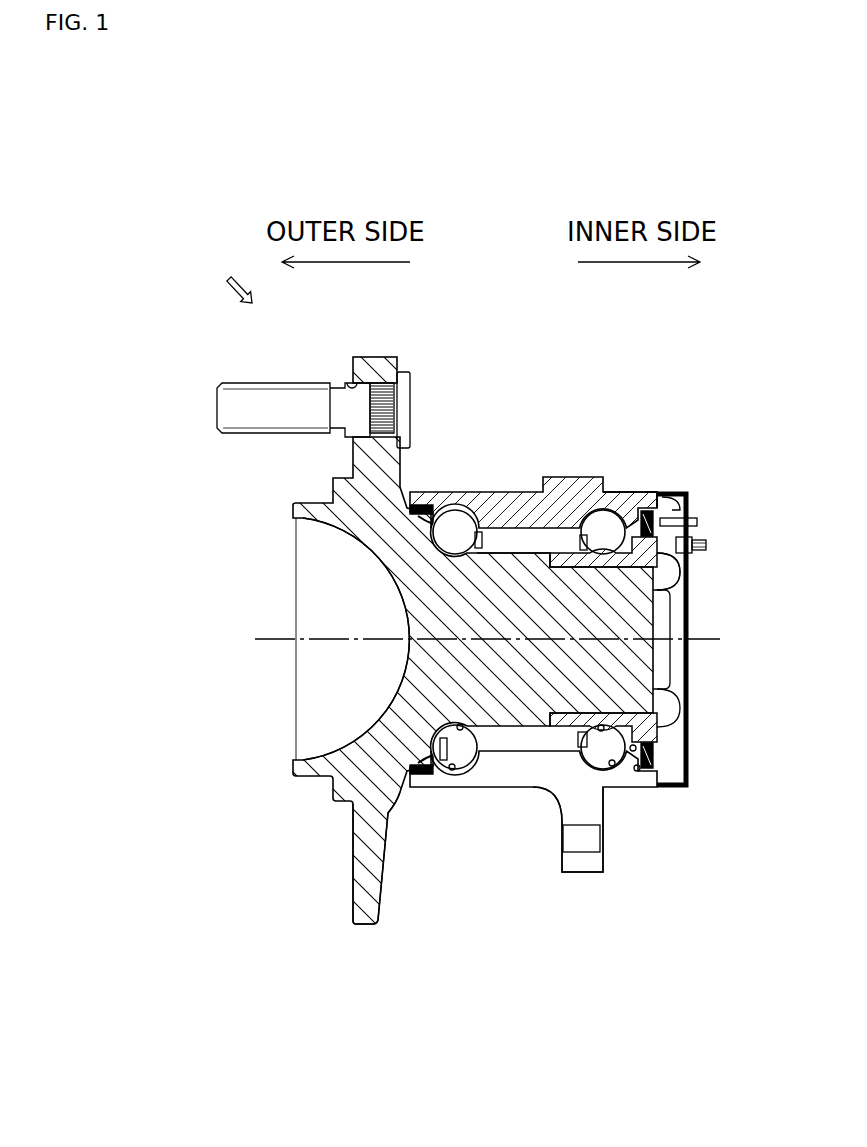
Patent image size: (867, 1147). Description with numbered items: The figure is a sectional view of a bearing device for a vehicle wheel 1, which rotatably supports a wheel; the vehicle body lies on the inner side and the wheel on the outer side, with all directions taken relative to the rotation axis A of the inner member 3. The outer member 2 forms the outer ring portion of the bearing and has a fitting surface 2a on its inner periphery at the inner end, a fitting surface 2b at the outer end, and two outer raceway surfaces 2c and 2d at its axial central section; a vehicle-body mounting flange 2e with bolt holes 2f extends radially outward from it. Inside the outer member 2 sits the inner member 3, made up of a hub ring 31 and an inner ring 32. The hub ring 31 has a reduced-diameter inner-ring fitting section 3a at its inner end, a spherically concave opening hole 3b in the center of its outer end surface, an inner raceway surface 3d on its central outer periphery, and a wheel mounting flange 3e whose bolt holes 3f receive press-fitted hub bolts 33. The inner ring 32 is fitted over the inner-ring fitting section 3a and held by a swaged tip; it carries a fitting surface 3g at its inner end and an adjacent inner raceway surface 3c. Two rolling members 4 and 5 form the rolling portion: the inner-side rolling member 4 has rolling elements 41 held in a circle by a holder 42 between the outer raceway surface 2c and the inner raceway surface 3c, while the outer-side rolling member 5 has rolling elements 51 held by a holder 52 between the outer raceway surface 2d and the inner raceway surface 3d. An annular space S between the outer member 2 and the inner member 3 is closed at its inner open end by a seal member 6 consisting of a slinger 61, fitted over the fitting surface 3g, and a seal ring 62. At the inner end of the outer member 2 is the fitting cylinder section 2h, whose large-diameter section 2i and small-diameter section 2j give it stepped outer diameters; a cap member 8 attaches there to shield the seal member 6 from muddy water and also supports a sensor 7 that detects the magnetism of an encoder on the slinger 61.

The bearing device for a vehicle wheel 1 is at (232, 279).
The outer member 2 is at (564, 472).
The fitting surface 2a is at (642, 773).
The fitting surface 2b is at (427, 772).
The outer raceway surface 2c is at (614, 768).
The outer raceway surface 2d is at (452, 770).
The vehicle-body mounting flange 2e is at (572, 873).
The bolt holes 2f is at (605, 849).
The fitting cylinder section 2h is at (683, 442).
The large-diameter section 2i is at (623, 491).
The small-diameter section 2j is at (666, 498).
The inner member 3 is at (763, 735).
The hub ring 31 is at (678, 706).
The inner ring 32 is at (658, 740).
The inner-ring fitting section 3a is at (672, 573).
The opening hole 3b is at (377, 723).
The inner raceway surface 3c is at (601, 726).
The inner raceway surface 3d is at (461, 724).
The wheel mounting flange 3e is at (360, 924).
The bolt holes 3f is at (345, 384).
The fitting surface 3g is at (633, 745).
The rolling member 4 is at (598, 639).
The rolling elements 41 is at (612, 551).
The holder 42 is at (577, 571).
The rolling member 5 is at (464, 639).
The rolling elements 51 is at (450, 548).
The holder 52 is at (483, 570).
The seal member 6 is at (716, 493).
The slinger 61 is at (657, 526).
The seal ring 62 is at (671, 493).
The sensor 7 is at (700, 547).
The cap member 8 is at (694, 673).
The hub bolts 33 is at (272, 382).
The annular space S is at (522, 534).
The rotation axis A is at (500, 640).